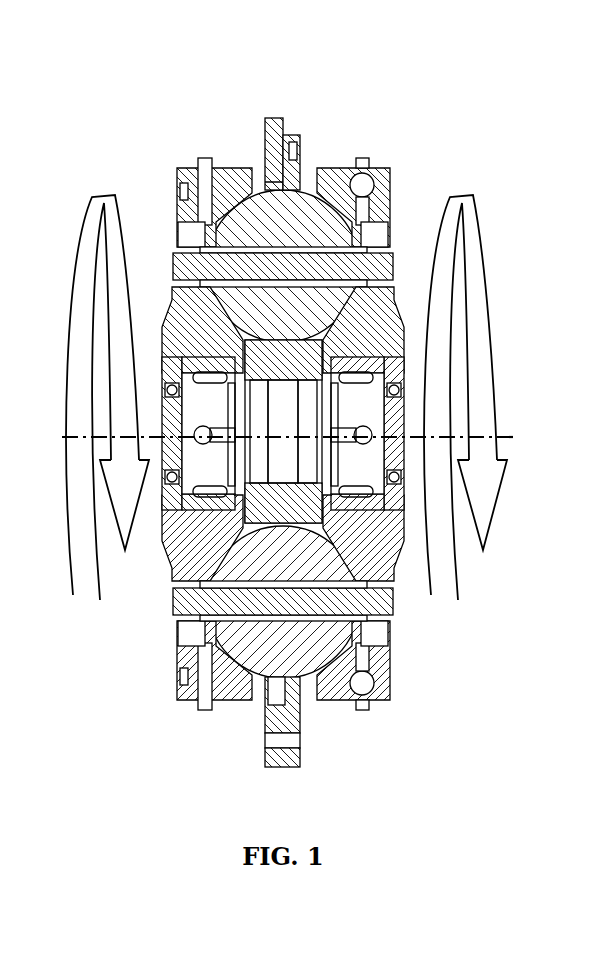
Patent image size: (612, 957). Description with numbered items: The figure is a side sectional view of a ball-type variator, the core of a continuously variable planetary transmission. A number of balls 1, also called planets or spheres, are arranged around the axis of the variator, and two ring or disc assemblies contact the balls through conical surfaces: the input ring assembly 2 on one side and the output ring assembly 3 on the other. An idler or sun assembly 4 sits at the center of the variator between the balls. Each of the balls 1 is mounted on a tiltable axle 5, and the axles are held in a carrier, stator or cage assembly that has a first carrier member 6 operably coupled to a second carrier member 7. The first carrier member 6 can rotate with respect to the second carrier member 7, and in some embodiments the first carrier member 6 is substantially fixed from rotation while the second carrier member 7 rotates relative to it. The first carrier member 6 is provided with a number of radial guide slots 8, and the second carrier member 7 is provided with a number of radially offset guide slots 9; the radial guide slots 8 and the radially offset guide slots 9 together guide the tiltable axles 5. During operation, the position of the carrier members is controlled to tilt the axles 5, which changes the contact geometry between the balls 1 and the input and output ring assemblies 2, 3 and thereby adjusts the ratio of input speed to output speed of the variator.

The balls 1 is at (258, 677).
The input ring assembly 2 is at (219, 148).
The output ring assembly 3 is at (378, 146).
The idler assembly 4 is at (335, 515).
The tiltable axles 5 is at (190, 600).
The first carrier member 6 is at (266, 130).
The second carrier member 7 is at (300, 153).
The radial guide slots 8 is at (188, 233).
The radially offset guide slots 9 is at (395, 233).